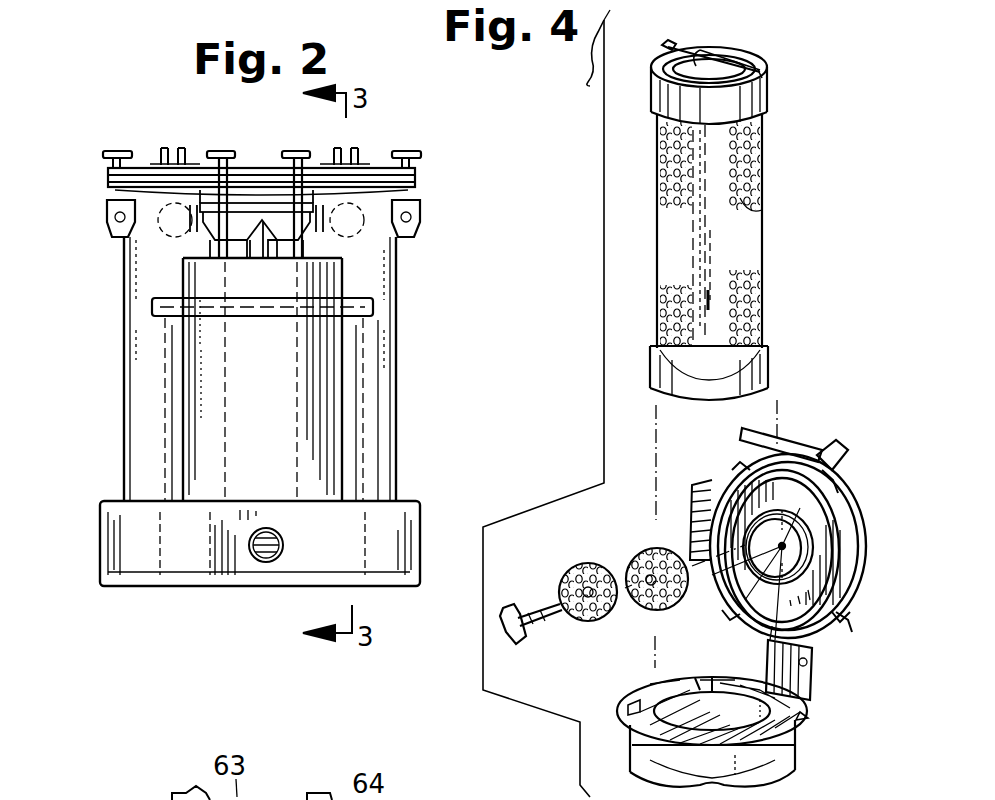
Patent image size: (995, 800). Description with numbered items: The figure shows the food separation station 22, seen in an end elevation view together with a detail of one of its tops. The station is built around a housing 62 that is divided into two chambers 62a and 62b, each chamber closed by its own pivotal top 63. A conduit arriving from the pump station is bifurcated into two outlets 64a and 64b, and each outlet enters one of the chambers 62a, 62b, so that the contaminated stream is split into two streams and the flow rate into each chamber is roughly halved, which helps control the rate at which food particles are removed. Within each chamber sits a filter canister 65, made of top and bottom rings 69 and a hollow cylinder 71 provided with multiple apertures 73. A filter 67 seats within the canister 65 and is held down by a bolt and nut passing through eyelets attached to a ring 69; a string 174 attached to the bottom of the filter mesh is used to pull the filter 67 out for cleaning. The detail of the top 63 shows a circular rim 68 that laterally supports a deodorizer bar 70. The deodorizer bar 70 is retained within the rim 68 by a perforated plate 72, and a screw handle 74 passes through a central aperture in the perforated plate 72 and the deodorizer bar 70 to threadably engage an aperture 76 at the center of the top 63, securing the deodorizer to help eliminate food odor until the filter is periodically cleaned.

In FIG. 2, the food separation station 22 is at (122, 305).
In FIG. 2, the housing 62 is at (123, 388).
In FIG. 2, the chamber 62a is at (130, 264).
In FIG. 2, the chamber 62b is at (395, 279).
In FIG. 2, the top 63 is at (148, 166).
In FIG. 4, the top 63 is at (846, 614).
In FIG. 2, the outlet 64a is at (180, 145).
In FIG. 2, the outlet 64b is at (330, 152).
In FIG. 4, the filter canister 65 is at (768, 140).
In FIG. 4, the filter 67 is at (765, 212).
In FIG. 4, the circular rim 68 is at (798, 530).
In FIG. 4, the ring 69 is at (766, 80).
In FIG. 4, the deodorizer bar 70 is at (640, 562).
In FIG. 4, the hollow cylinder 71 is at (732, 240).
In FIG. 4, the perforated plate 72 is at (574, 572).
In FIG. 4, the apertures 73 is at (770, 292).
In FIG. 4, the screw handle 74 is at (530, 628).
In FIG. 4, the aperture 76 is at (738, 612).
In FIG. 4, the string 174 is at (712, 300).